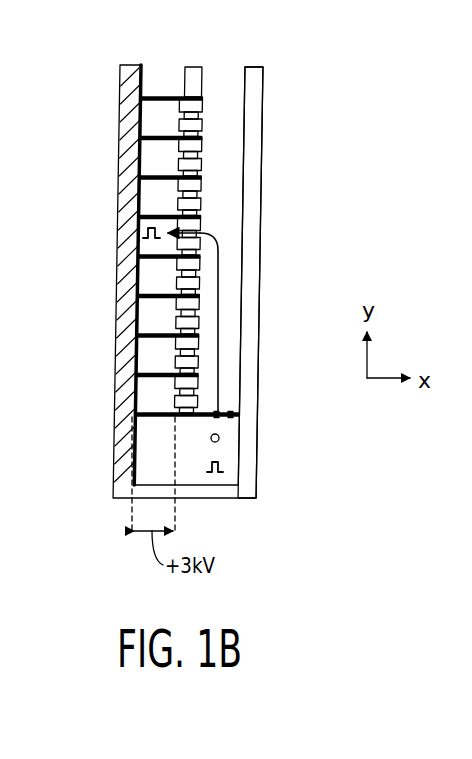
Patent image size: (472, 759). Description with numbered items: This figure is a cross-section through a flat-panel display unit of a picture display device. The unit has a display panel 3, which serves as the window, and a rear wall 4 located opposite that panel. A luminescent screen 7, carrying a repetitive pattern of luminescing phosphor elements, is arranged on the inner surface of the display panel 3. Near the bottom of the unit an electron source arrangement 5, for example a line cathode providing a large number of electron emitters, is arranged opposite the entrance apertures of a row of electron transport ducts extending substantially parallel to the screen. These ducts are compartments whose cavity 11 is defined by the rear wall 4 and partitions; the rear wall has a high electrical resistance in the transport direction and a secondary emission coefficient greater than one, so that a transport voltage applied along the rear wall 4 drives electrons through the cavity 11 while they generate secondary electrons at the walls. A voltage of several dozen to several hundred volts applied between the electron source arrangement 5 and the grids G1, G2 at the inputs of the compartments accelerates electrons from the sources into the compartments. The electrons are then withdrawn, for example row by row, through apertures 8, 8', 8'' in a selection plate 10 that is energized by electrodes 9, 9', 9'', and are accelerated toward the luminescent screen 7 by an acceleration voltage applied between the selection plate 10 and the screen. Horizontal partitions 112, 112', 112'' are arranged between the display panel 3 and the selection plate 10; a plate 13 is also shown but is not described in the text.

The display panel 3 is at (130, 82).
The rear wall 4 is at (250, 293).
The electron source arrangement 5 is at (218, 442).
The luminescent screen 7 is at (140, 233).
The aperture 8 is at (246, 116).
The aperture 8' is at (247, 156).
The aperture 8'' is at (250, 194).
The electrode 9 is at (134, 107).
The electrode 9' is at (134, 139).
The electrode 9'' is at (133, 186).
The selection plate 10 is at (193, 87).
The cavity 11 is at (228, 222).
The grid plate 13 is at (150, 418).
The horizontal partition 112 is at (126, 297).
The horizontal partition 112' is at (124, 332).
The horizontal partition 112'' is at (121, 367).
The grid G1 is at (226, 418).
The grid G2 is at (220, 413).